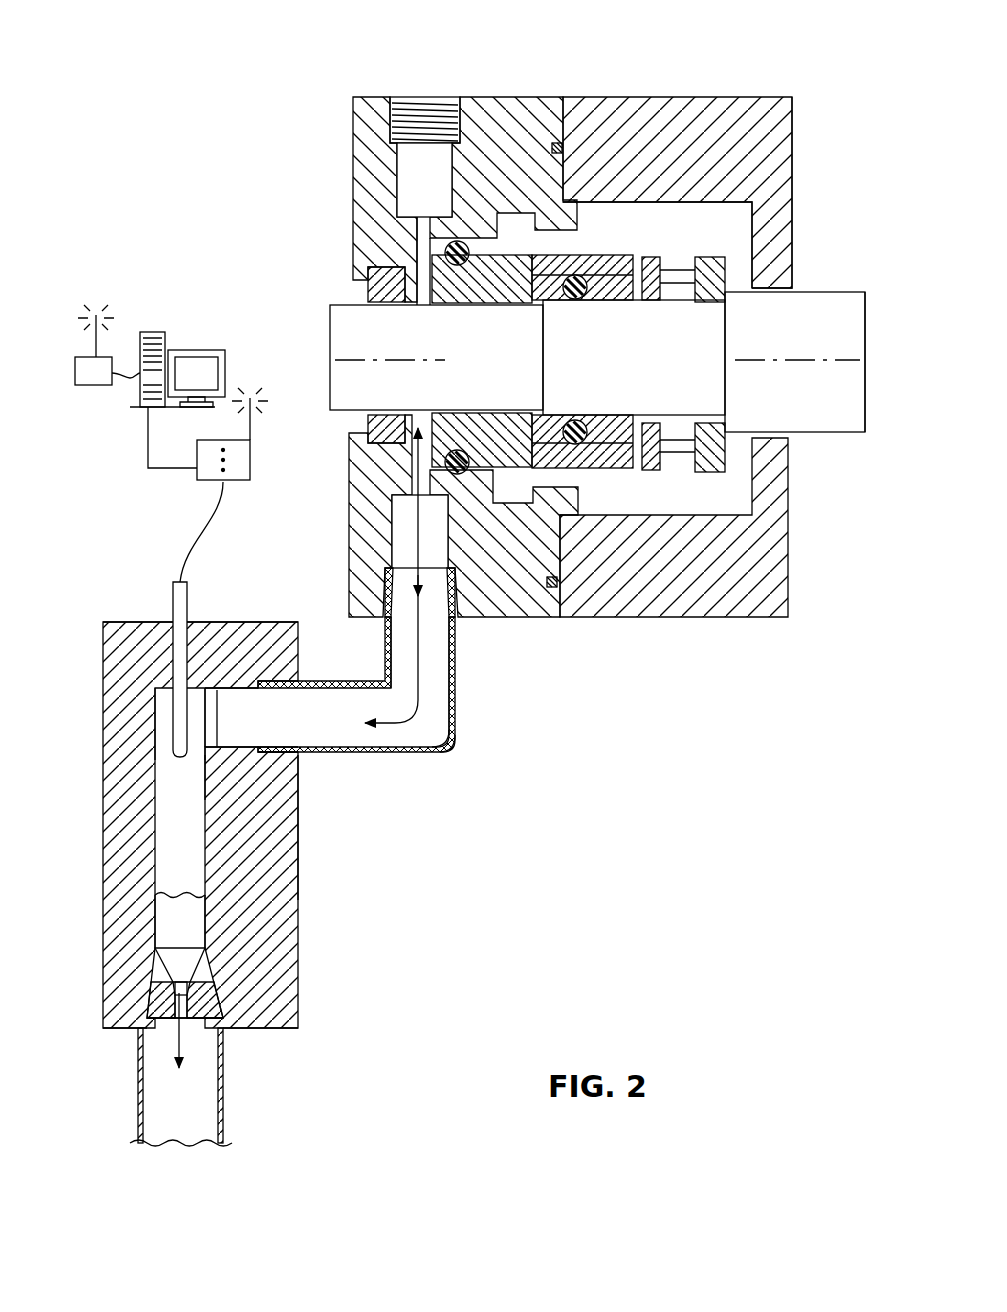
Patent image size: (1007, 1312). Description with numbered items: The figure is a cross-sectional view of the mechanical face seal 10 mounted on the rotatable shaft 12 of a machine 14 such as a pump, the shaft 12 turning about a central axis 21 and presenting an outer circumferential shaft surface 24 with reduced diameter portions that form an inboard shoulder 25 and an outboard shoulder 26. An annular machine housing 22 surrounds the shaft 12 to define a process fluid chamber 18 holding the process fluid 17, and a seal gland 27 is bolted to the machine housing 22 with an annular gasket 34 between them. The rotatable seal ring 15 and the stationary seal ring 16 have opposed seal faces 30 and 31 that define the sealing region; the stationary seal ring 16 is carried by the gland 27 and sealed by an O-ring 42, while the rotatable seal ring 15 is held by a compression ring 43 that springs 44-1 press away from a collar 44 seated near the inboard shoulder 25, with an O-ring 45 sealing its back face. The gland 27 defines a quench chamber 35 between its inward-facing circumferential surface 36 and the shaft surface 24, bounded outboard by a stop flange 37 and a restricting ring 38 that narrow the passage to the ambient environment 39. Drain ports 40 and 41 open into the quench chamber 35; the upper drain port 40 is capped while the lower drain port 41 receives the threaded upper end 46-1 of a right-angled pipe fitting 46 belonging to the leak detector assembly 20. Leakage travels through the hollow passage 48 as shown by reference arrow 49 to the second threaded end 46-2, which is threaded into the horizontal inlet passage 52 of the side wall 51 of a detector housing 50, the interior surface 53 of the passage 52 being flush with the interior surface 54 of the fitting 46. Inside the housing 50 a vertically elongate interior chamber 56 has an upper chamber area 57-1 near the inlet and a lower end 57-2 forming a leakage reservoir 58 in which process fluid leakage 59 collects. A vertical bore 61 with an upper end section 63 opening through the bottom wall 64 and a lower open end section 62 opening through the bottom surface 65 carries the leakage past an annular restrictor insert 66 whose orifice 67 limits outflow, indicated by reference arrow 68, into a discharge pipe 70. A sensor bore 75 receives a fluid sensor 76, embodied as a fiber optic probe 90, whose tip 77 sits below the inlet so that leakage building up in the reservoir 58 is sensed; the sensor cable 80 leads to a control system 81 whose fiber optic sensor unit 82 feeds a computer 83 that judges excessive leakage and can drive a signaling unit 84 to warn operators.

The mechanical face seal 10 is at (697, 75).
The rotatable shaft 12 is at (838, 433).
The machine 14 is at (793, 200).
The rotatable seal ring 15 is at (608, 283).
The stationary seal ring 16 is at (482, 303).
The process fluid 17 is at (695, 240).
The process fluid chamber 18 is at (620, 226).
The leak detector assembly 20 is at (387, 1043).
The central axis 21 is at (862, 362).
The machine housing 22 is at (735, 110).
The outer circumferential shaft surface 24 is at (325, 350).
The inboard shoulder 25 is at (705, 300).
The outboard shoulder 26 is at (560, 405).
The seal gland 27 is at (477, 112).
The seal face 30 is at (540, 410).
The seal face 31 is at (538, 303).
The annular gasket 34 is at (557, 143).
The quench chamber 35 is at (400, 470).
The inward-facing circumferential surface 36 is at (380, 288).
The stop flange 37 is at (360, 272).
The restricting ring 38 is at (378, 430).
The ambient environment 39 is at (290, 112).
The drain port 40 is at (392, 110).
The drain port 41 is at (398, 540).
The O-ring 42 is at (425, 140).
The compression ring 43 is at (655, 285).
The collar 44 is at (715, 275).
The springs 44-1 is at (722, 455).
The O-ring 45 is at (573, 291).
The right-angled pipe fitting 46 is at (457, 750).
The threaded upper end 46-1 is at (455, 608).
The second threaded end 46-2 is at (312, 757).
The hollow passage 48 is at (428, 670).
The reference arrow 49 is at (420, 703).
The detector housing 50 is at (285, 982).
The annular side wall 51 is at (265, 848).
The horizontal inlet passage 52 is at (248, 805).
The interior surface 53 is at (252, 735).
The interior surface 54 is at (398, 752).
The interior chamber 56 is at (165, 735).
The upper chamber area 57-1 is at (197, 688).
The lower end 57-2 is at (190, 918).
The leakage reservoir 58 is at (183, 868).
The process fluid leakage 59 is at (165, 952).
The vertical bore 61 is at (175, 990).
The lower open end section 62 is at (152, 1026).
The upper end section 63 is at (168, 975).
The bottom wall 64 is at (200, 945).
The bottom surface 65 is at (288, 1028).
The annular restrictor insert 66 is at (190, 1025).
The orifice 67 is at (207, 1000).
The reference arrow 68 is at (193, 1030).
The discharge pipe 70 is at (138, 1110).
The sensor bore 75 is at (198, 700).
The fluid sensor 76 is at (172, 590).
The tip 77 is at (172, 760).
The sensor cable 80 is at (178, 550).
The control system 81 is at (190, 300).
The fiber optic sensor unit 82 is at (228, 488).
The computer 83 is at (197, 350).
The signaling unit 84 is at (72, 352).
The fiber optic probe 90 is at (170, 662).